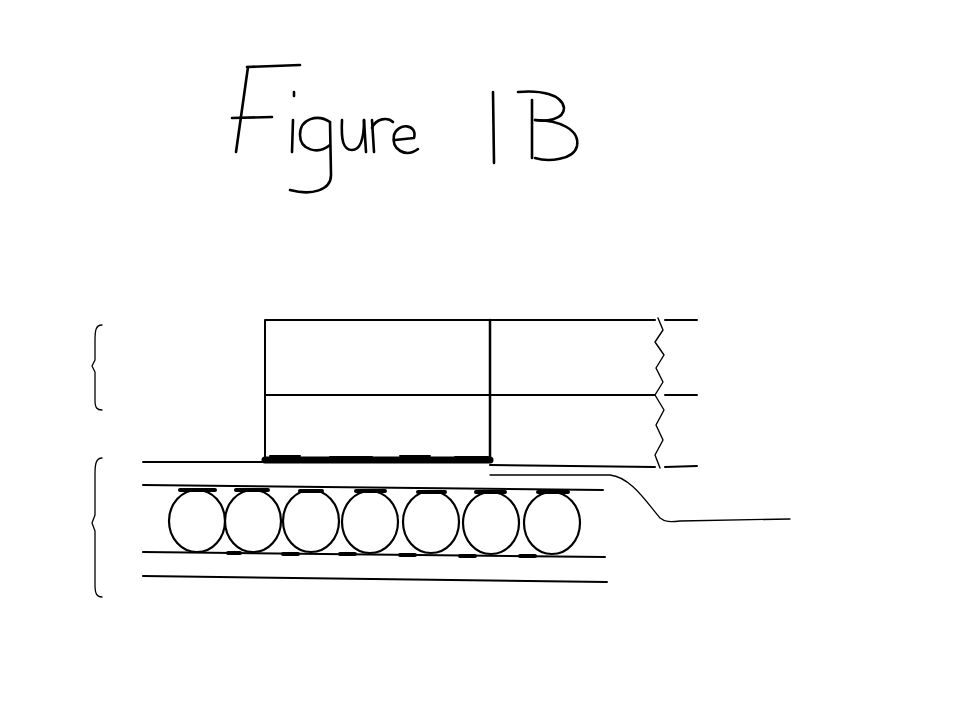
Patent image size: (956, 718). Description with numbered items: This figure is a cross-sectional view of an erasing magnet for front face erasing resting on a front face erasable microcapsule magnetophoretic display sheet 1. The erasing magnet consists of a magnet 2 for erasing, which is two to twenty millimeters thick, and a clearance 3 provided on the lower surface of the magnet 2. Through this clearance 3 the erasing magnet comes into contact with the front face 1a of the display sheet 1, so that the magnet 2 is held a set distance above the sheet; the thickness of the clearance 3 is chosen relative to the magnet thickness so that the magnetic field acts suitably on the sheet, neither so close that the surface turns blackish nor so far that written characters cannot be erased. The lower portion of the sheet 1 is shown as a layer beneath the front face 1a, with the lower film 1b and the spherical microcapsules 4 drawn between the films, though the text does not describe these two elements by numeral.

The front face erasable microcapsule magnetophoretic display sheet 1 is at (73, 461).
The front face 1a is at (500, 509).
The lower film of lower layer 1b is at (670, 656).
The magnet for erasing 2 is at (533, 284).
The clearance 3 is at (260, 430).
The spheres 4 is at (258, 632).